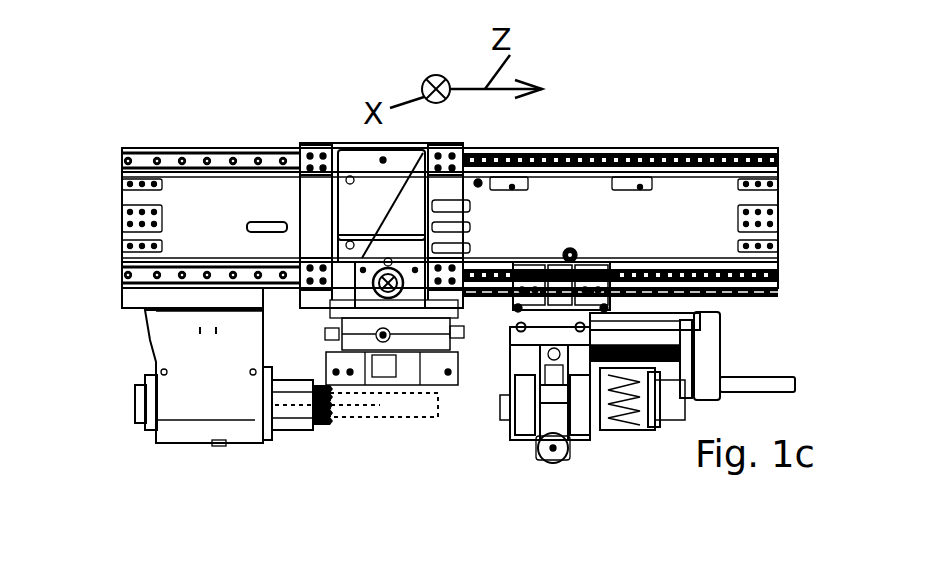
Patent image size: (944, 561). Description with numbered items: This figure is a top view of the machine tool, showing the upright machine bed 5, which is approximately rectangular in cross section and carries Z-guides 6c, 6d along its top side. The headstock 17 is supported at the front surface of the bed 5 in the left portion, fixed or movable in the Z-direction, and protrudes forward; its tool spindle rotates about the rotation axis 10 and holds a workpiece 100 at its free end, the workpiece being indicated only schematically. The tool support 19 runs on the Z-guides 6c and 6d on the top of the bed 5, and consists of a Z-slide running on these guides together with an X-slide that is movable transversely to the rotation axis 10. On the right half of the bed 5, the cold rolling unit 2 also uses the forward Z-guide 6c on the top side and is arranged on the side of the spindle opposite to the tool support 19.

The Z-guide 6d is at (121, 152).
The Z-guide 6c is at (122, 273).
The machine bed 5 is at (450, 217).
The tool support 19 is at (385, 264).
The headstock 17 is at (145, 338).
The rotation axis 10 is at (256, 406).
The workpiece 100 is at (372, 418).
The cold rolling unit 2 is at (613, 446).